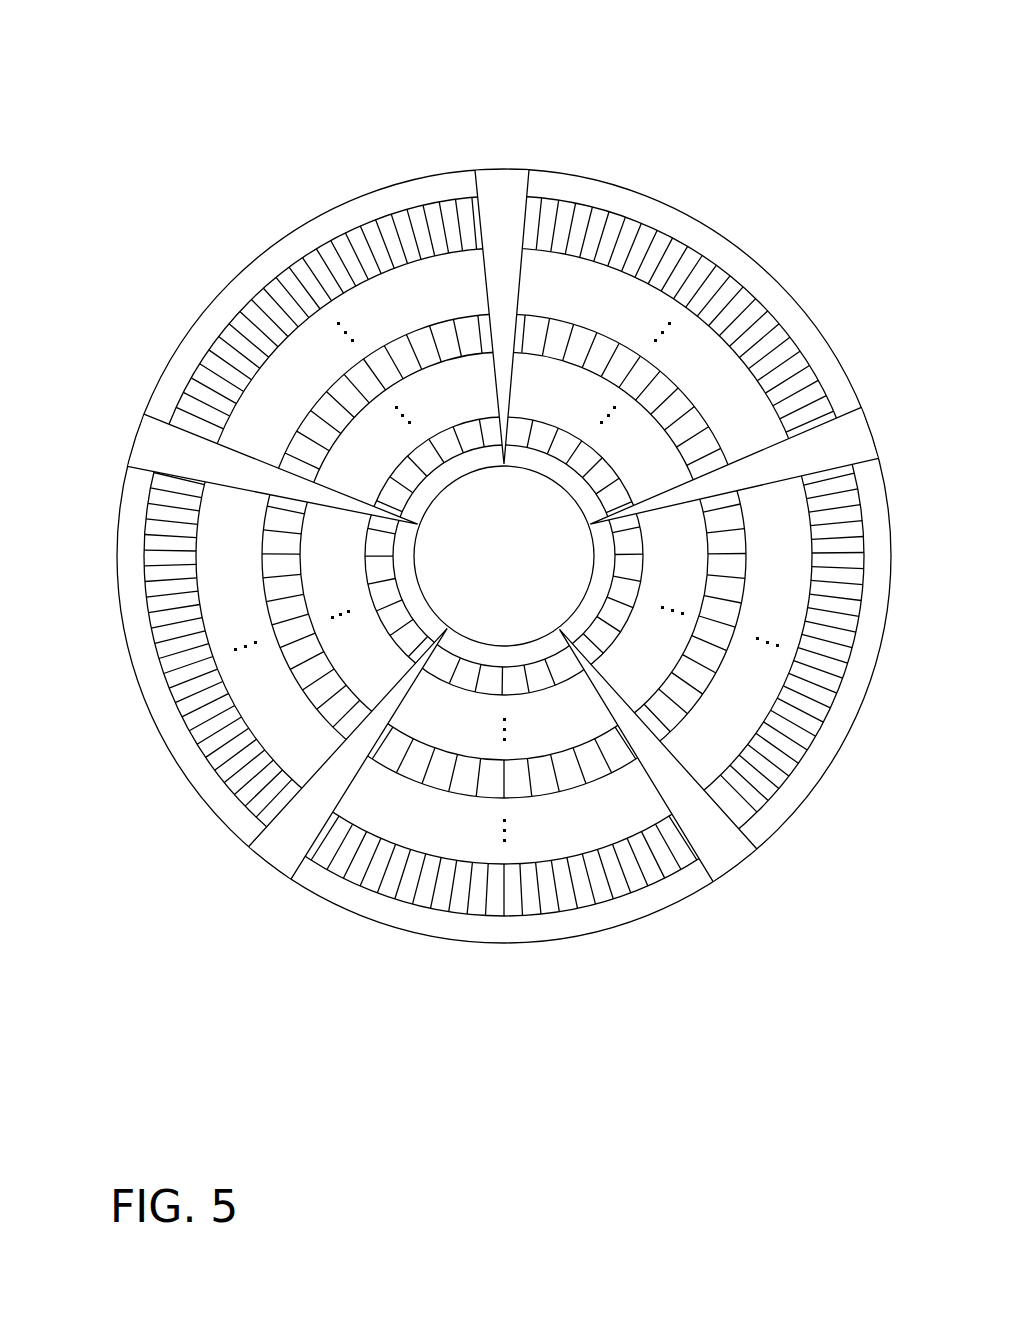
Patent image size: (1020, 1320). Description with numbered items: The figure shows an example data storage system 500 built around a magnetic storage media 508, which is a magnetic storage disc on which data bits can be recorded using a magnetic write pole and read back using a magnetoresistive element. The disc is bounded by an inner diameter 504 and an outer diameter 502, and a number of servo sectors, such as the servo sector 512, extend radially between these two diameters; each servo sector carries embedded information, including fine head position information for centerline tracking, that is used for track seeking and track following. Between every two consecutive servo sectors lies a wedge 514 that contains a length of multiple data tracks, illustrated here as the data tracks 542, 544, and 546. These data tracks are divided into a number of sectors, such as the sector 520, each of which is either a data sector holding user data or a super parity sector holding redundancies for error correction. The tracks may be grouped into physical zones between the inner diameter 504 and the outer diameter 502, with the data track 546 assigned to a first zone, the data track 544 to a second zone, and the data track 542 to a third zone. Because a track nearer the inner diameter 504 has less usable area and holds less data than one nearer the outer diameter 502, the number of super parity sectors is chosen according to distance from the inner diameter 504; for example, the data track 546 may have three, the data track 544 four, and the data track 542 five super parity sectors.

The data storage system 500 is at (228, 84).
The outer diameter 502 is at (267, 250).
The inner diameter 504 is at (566, 490).
The magnetic storage media 508 is at (590, 178).
The servo sector 512 is at (130, 410).
The wedge 514 is at (217, 878).
The sector 520 is at (293, 662).
The data track 542 is at (178, 727).
The data track 544 is at (280, 665).
The data track 546 is at (382, 640).